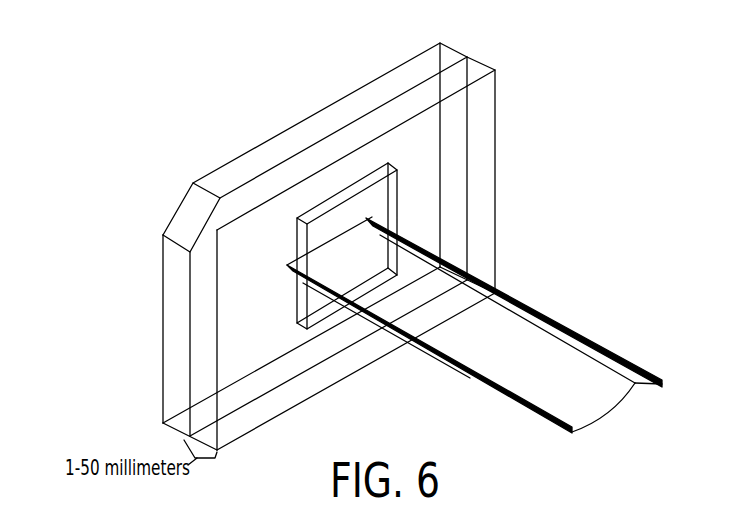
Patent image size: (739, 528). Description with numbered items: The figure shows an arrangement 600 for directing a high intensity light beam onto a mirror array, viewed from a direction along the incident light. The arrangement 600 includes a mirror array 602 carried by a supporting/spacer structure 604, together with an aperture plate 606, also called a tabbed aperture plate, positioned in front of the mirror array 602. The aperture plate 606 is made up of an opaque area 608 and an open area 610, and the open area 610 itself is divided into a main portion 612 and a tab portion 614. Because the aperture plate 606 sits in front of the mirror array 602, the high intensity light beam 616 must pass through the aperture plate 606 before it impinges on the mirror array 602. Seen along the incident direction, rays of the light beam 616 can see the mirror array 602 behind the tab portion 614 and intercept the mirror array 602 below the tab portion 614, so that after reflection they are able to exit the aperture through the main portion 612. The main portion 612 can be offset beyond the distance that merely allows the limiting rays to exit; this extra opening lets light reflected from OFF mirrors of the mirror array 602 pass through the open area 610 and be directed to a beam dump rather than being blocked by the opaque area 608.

The arrangement 600 is at (632, 103).
The mirror array 602 is at (392, 165).
The supporting/spacer structure 604 is at (218, 178).
The aperture plate 606 is at (502, 69).
The opaque area 608 is at (230, 427).
The open area 610 is at (338, 333).
The main portion 612 is at (429, 237).
The tab portion 614 is at (357, 263).
The high intensity light beam 616 is at (529, 409).